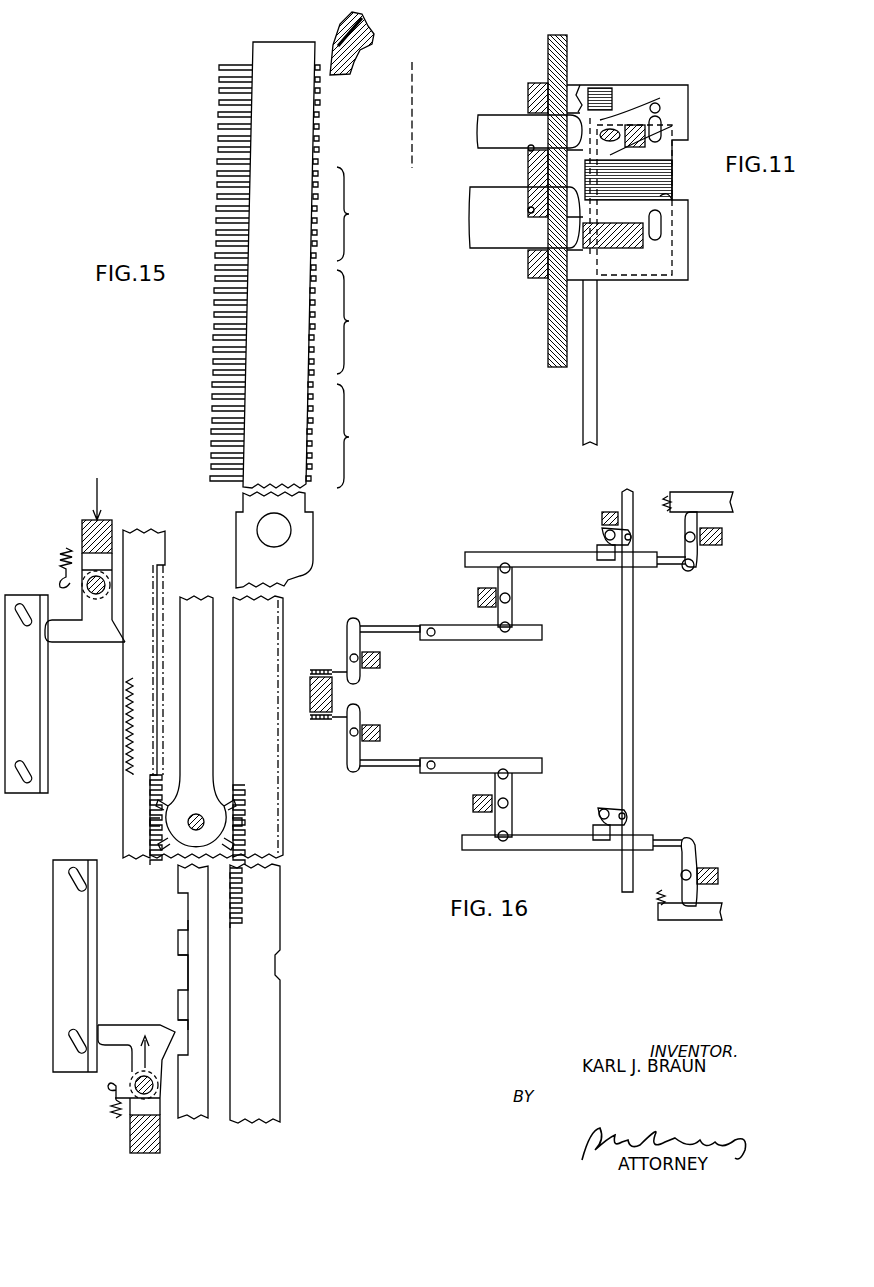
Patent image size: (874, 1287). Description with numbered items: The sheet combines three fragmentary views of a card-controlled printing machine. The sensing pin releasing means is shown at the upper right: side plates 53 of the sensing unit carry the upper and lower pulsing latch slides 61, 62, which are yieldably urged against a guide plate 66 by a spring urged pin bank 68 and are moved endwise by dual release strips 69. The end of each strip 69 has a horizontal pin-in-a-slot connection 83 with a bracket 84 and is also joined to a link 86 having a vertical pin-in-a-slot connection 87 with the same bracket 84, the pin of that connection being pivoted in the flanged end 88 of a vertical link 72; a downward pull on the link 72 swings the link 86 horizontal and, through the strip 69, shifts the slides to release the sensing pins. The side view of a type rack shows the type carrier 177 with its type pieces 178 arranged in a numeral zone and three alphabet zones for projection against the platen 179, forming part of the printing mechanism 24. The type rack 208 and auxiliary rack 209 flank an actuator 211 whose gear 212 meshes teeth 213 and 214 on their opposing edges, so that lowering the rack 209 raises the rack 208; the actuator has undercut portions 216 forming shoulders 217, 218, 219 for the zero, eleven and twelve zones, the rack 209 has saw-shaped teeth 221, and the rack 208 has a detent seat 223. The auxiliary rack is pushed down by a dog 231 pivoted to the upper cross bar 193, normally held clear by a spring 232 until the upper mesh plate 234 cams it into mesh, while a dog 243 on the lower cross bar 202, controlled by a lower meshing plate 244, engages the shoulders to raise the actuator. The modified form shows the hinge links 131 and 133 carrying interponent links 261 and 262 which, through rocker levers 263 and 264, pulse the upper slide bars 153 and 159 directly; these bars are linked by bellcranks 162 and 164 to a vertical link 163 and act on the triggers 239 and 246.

In FIG. 15, the type carrier 177 is at (288, 301).
In FIG. 15, the type pieces 178 is at (246, 292).
In FIG. 15, the platen 179 is at (371, 34).
In FIG. 15, the printing mechanism 24 is at (332, 521).
In FIG. 15, the type rack 208 is at (271, 671).
In FIG. 15, the auxiliary rack 209 is at (142, 545).
In FIG. 15, the actuator 211 is at (222, 818).
In FIG. 15, the gear 212 is at (236, 788).
In FIG. 15, the teeth of type carrier rack 213 is at (242, 905).
In FIG. 15, the teeth of auxiliary rack 214 is at (152, 775).
In FIG. 15, the undercut portions 216 is at (238, 972).
In FIG. 15, the shoulder 217 is at (178, 1020).
In FIG. 15, the shoulder 218 is at (180, 955).
In FIG. 15, the shoulder 219 is at (178, 893).
In FIG. 15, the saw-shaped teeth 221 is at (128, 684).
In FIG. 15, the detent seat 223 is at (281, 965).
In FIG. 15, the upper cross bar 193 is at (104, 523).
In FIG. 15, the dog 231 is at (100, 632).
In FIG. 15, the spring 232 is at (66, 548).
In FIG. 15, the upper mesh plate 234 is at (30, 743).
In FIG. 16, the upper mesh plate 234 is at (706, 500).
In FIG. 15, the dog 243 is at (132, 1090).
In FIG. 15, the lower meshing plate 244 is at (55, 967).
In FIG. 16, the lower meshing plate 244 is at (708, 921).
In FIG. 15, the lower cross bar 202 is at (130, 1131).
In FIG. 11, the side plates 53 is at (550, 348).
In FIG. 11, the upper pulsing latch slide 61 is at (495, 116).
In FIG. 11, the lower pulsing latch slide 62 is at (492, 250).
In FIG. 11, the guide plate 66 is at (530, 263).
In FIG. 11, the release strips 69 is at (636, 126).
In FIG. 11, the vertical links 72 is at (597, 372).
In FIG. 11, the pin-in-a-slot connection 83 is at (610, 128).
In FIG. 11, the bracket 84 is at (670, 270).
In FIG. 11, the link 86 is at (640, 124).
In FIG. 11, the pin-in-a-slot connection 87 is at (660, 108).
In FIG. 11, the flanged end 88 is at (680, 196).
In FIG. 16, the hinge link 131 is at (400, 630).
In FIG. 16, the hinge link 133 is at (396, 771).
In FIG. 16, the spring urged pin bank 68 is at (337, 680).
In FIG. 16, the upper slide bar 153 is at (556, 563).
In FIG. 16, the upper slide bar 159 is at (540, 852).
In FIG. 16, the bellcrank 162 is at (605, 530).
In FIG. 16, the vertical link 163 is at (633, 690).
In FIG. 16, the bellcrank 164 is at (610, 840).
In FIG. 16, the supporting trigger 239 is at (697, 565).
In FIG. 16, the trigger 246 is at (696, 858).
In FIG. 16, the interponent link 261 is at (483, 642).
In FIG. 16, the interponent link 262 is at (538, 760).
In FIG. 16, the rocker lever 263 is at (512, 610).
In FIG. 16, the rocker lever 264 is at (512, 818).